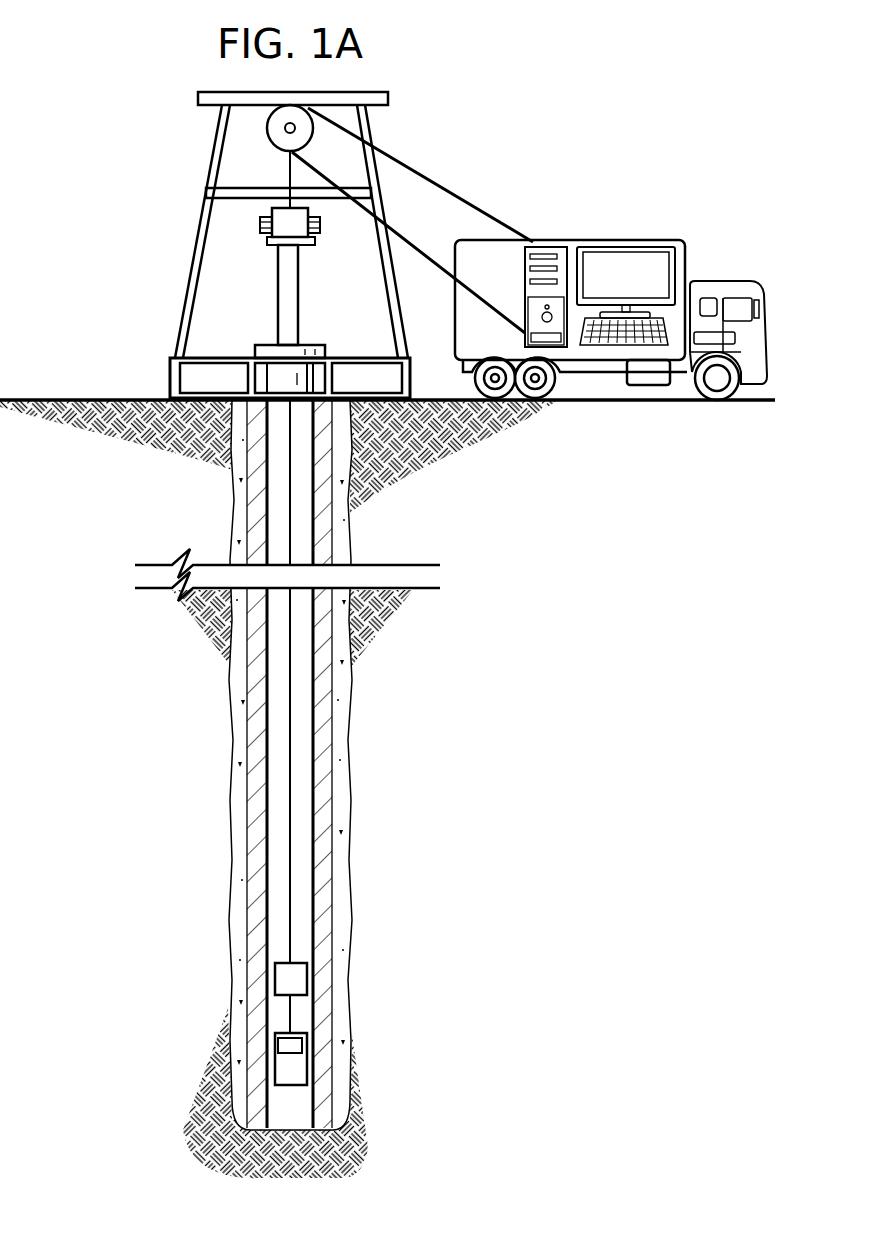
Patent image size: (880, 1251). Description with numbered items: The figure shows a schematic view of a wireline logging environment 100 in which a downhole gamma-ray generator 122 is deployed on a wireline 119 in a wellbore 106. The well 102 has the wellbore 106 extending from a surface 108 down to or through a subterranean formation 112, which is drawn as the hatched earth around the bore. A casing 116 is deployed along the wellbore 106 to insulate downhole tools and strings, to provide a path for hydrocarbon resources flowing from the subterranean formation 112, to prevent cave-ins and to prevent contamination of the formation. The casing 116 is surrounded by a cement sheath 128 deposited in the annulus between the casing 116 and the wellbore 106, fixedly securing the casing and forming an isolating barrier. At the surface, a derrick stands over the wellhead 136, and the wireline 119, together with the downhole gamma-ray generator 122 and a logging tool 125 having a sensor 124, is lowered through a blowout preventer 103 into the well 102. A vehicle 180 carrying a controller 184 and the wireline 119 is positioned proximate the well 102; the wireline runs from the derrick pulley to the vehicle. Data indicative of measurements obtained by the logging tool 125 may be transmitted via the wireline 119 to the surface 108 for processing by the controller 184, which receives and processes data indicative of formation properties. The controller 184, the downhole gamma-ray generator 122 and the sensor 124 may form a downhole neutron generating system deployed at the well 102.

The wireline logging environment 100 is at (109, 58).
The well 102 is at (317, 342).
The blowout preventer 103 is at (280, 281).
The wellbore 106 is at (349, 750).
The surface 108 is at (80, 398).
The subterranean formation 112 is at (562, 683).
The casing 116 is at (327, 825).
The wireline 119 is at (290, 170).
The downhole gamma-ray generator 122 is at (276, 982).
The sensor 124 is at (284, 1045).
The logging tool 125 is at (300, 1066).
The cement sheath 128 is at (343, 705).
The wellhead 136 is at (268, 343).
The vehicle 180 is at (603, 241).
The controller 184 is at (547, 247).